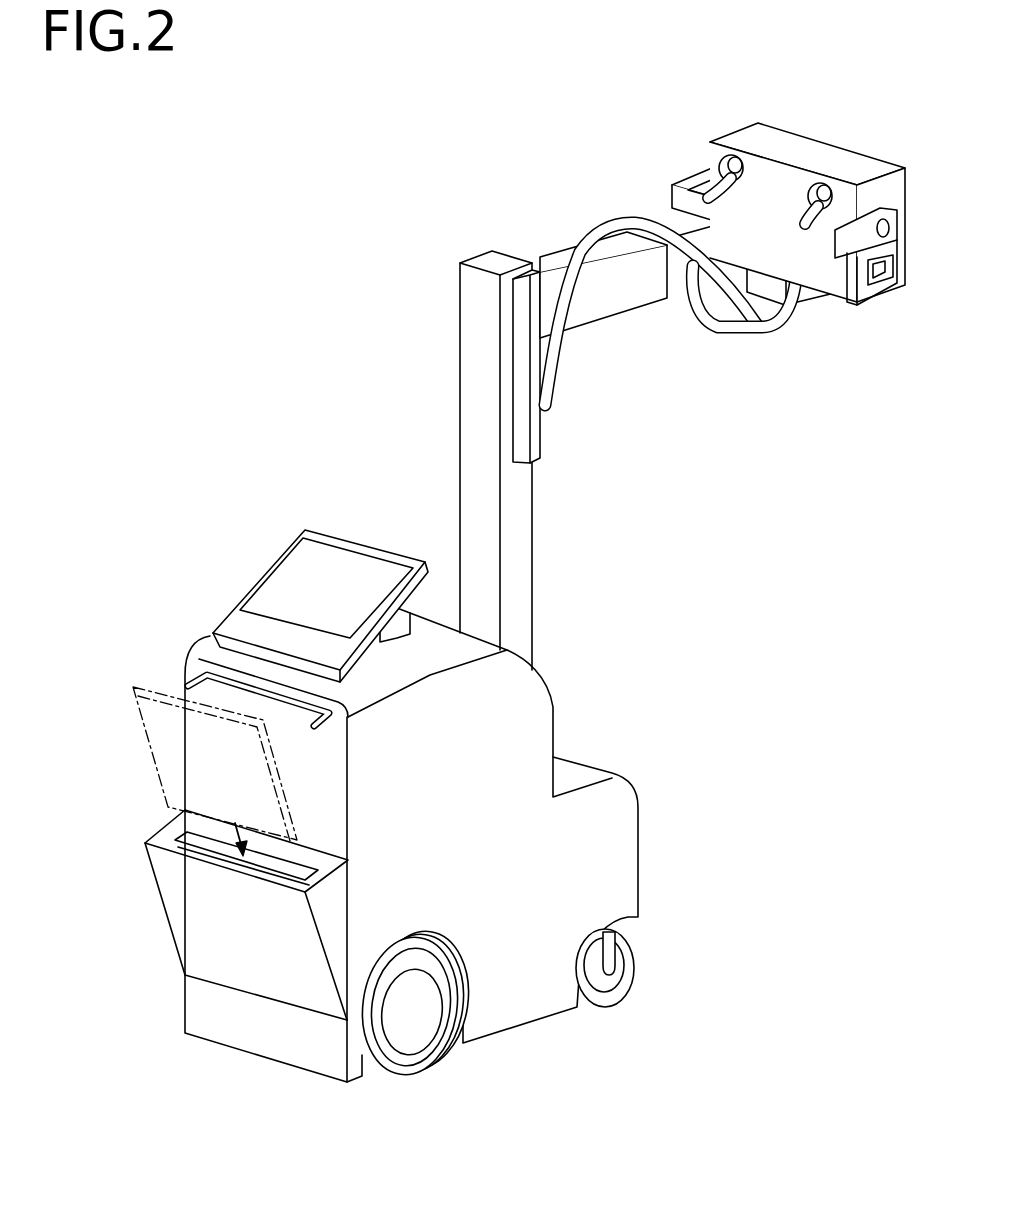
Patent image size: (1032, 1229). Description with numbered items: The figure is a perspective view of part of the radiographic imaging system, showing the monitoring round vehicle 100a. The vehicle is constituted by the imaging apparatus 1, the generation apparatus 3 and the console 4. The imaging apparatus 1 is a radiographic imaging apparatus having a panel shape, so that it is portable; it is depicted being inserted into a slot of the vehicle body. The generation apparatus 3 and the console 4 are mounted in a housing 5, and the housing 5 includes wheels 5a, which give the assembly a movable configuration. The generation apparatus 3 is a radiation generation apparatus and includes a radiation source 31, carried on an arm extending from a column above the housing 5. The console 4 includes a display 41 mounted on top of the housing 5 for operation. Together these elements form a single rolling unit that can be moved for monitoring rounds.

The monitoring round vehicle 100a is at (245, 235).
The imaging apparatus 1 is at (138, 688).
The generation apparatus 3 is at (557, 544).
The radiation source 31 is at (826, 152).
The console 4 is at (268, 562).
The display 41 is at (333, 573).
The housing 5 is at (563, 725).
The wheels 5a is at (418, 1060).